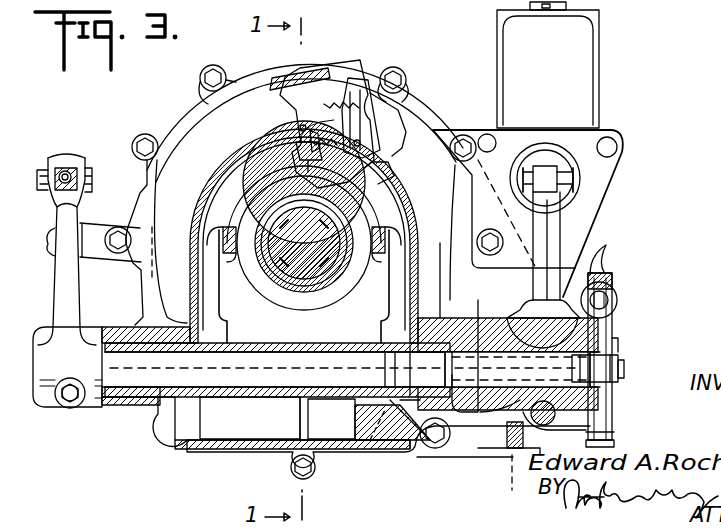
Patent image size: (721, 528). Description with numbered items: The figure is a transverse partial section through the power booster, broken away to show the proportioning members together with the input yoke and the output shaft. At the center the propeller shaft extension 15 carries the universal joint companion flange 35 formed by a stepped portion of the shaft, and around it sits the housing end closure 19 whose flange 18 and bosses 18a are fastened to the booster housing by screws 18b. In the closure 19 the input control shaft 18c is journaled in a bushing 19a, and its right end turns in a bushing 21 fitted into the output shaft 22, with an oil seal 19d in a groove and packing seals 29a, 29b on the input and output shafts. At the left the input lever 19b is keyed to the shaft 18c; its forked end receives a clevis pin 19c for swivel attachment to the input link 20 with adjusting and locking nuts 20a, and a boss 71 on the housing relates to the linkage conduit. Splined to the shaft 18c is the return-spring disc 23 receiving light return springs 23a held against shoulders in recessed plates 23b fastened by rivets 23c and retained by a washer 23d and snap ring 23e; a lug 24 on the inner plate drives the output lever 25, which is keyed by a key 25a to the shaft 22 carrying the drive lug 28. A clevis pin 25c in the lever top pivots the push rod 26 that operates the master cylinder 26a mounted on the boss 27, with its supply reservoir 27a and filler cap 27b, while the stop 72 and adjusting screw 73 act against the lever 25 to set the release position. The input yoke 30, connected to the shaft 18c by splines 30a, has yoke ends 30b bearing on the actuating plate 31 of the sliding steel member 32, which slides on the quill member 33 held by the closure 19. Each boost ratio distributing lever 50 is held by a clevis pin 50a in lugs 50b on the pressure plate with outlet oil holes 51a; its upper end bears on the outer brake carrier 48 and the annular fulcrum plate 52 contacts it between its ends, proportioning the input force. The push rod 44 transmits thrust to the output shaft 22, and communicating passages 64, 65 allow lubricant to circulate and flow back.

The propeller shaft extension 15 is at (318, 237).
The flange 18 is at (196, 118).
The bosses 18a is at (210, 70).
The screws 18b is at (406, 78).
The input control shaft 18c is at (142, 372).
The housing end closure 19 is at (168, 126).
The bushing 19a is at (108, 405).
The input lever 19b is at (64, 272).
The clevis pin 19c is at (92, 178).
The oil seal 19d is at (572, 362).
The input link 20 is at (63, 172).
The adjusting and locking nuts 20a is at (68, 170).
The bushing 21 is at (382, 330).
The output shaft 22 is at (460, 322).
The return-spring disc 23 is at (612, 328).
The return springs 23a is at (618, 298).
The recessed plates 23b is at (626, 255).
The rivets 23c is at (615, 440).
The washer 23d is at (618, 345).
The snap ring 23e is at (626, 360).
The lug 24 is at (580, 438).
The output lever 25 is at (548, 236).
The key 25a is at (528, 330).
The clevis pin 25c is at (573, 187).
The push rod 26 is at (552, 160).
The master cylinder 26a is at (521, 158).
The boss 27 is at (612, 169).
The master cylinder supply reservoir 27a is at (585, 54).
The filler cap 27b is at (566, 8).
The drive lug 28 is at (380, 460).
The oil packing seal 29a is at (118, 326).
The oil packing seal 29b is at (456, 433).
The input yoke 30 is at (305, 363).
The splines 30a is at (388, 370).
The yoke ends 30b is at (212, 242).
The actuating plate 31 is at (252, 188).
The sliding steel member 32 is at (216, 176).
The quill member 33 is at (242, 212).
The universal joint companion flange 35 is at (275, 258).
The push rod 44 is at (380, 440).
The outer brake carrier 48 is at (356, 110).
The boost ratio distributing input lever 50 is at (340, 100).
The clevis pin 50a is at (292, 142).
The lugs 50b is at (326, 146).
The outlet oil holes 51a is at (298, 128).
The annular fulcrum plate 52 is at (392, 165).
The communicating passage 64 is at (342, 428).
The communicating passage 65 is at (248, 423).
The boss 71 is at (50, 238).
The stop 72 is at (505, 445).
The adjusting screw 73 is at (503, 479).